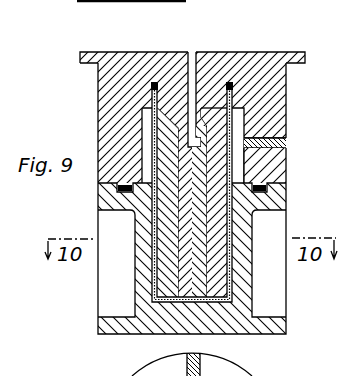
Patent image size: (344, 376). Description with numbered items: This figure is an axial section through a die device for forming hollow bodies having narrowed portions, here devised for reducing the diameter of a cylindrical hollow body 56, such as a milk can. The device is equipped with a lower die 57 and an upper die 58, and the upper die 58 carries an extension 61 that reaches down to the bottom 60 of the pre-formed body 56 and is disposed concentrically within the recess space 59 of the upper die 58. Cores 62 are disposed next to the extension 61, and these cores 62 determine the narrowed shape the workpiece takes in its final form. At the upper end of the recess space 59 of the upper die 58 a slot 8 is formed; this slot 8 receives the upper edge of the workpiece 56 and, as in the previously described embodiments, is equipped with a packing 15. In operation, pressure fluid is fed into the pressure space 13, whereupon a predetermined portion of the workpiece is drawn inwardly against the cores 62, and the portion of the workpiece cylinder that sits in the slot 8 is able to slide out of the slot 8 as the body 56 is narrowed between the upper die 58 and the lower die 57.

The slot 8 is at (172, 52).
The upper die 58 is at (254, 72).
The packing 15 is at (152, 87).
The recess space 59 is at (170, 140).
The cylindrical hollow body 56 is at (237, 123).
The pressure space 13 is at (235, 165).
The lower die 57 is at (247, 200).
The extension 61 is at (180, 252).
The cores 62 is at (210, 273).
The bottom 60 is at (213, 305).